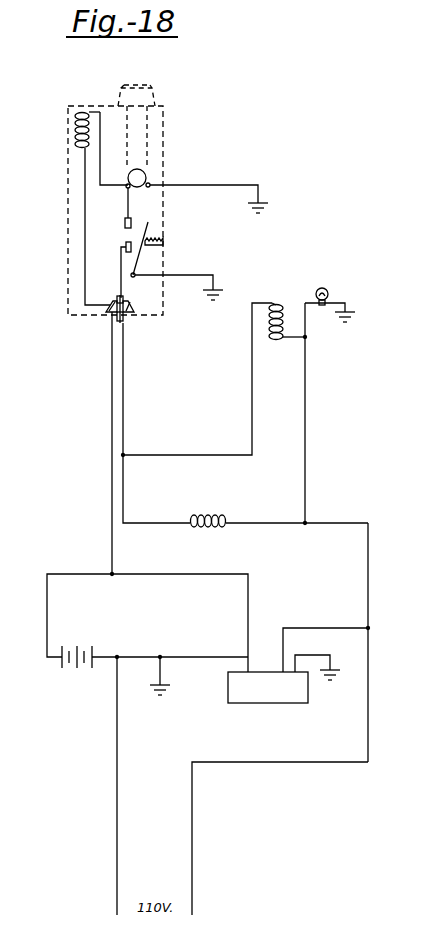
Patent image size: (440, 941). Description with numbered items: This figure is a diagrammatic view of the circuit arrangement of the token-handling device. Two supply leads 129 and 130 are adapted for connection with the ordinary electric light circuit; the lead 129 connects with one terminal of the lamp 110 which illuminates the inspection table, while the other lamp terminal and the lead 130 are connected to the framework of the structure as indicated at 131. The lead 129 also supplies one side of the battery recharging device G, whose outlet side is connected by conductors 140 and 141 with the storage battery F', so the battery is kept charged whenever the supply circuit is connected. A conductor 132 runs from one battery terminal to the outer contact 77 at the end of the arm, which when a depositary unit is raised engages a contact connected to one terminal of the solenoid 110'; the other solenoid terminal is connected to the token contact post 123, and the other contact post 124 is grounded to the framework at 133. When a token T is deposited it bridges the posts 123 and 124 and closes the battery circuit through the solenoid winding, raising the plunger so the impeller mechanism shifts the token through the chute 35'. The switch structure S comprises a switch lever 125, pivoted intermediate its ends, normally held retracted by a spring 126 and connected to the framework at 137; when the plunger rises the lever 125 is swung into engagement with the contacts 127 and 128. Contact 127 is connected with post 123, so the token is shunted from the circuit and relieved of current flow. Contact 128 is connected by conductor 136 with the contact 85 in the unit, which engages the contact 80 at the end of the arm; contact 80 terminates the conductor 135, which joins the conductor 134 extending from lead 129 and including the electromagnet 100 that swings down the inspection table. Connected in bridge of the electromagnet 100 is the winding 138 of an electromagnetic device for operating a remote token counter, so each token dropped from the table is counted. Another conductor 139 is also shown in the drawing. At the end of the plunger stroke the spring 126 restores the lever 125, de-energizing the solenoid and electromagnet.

The chute 35' is at (160, 126).
The solenoid 110' is at (54, 130).
The contact post 123 is at (118, 189).
The contact post 124 is at (151, 184).
The token T is at (145, 176).
The framework connection 133 is at (266, 203).
The contact 127 is at (134, 226).
The contact 128 is at (118, 238).
The conductor 136 is at (119, 285).
The switch structure S is at (150, 258).
The switch lever 125 is at (163, 238).
The spring 126 is at (164, 250).
The framework connection 137 is at (219, 292).
The contact 80 is at (108, 304).
The contact 85 is at (124, 308).
The outer contact 77 is at (108, 316).
The conductor 132 is at (112, 546).
The conductor 135 is at (124, 390).
The conductor 134 is at (251, 386).
The electromagnet 100 is at (280, 295).
The lamp 110 is at (330, 294).
The supply lead 129 is at (306, 478).
The winding 138 is at (207, 517).
The conductor 139 is at (330, 620).
The conductor 141 is at (219, 560).
The storage battery F' is at (79, 639).
The conductor 140 is at (212, 644).
The framework connection 131 is at (162, 694).
The charger G is at (284, 690).
The supply lead 130 is at (117, 814).